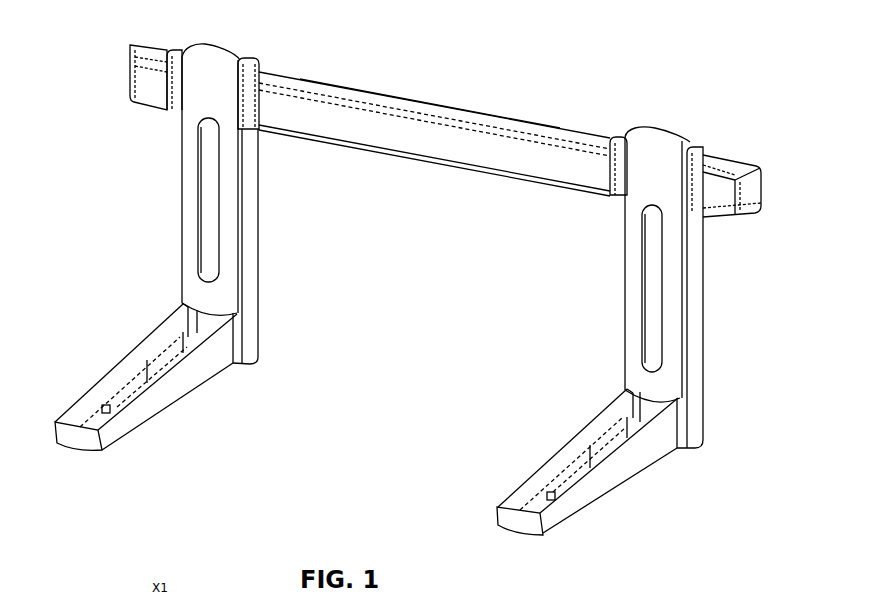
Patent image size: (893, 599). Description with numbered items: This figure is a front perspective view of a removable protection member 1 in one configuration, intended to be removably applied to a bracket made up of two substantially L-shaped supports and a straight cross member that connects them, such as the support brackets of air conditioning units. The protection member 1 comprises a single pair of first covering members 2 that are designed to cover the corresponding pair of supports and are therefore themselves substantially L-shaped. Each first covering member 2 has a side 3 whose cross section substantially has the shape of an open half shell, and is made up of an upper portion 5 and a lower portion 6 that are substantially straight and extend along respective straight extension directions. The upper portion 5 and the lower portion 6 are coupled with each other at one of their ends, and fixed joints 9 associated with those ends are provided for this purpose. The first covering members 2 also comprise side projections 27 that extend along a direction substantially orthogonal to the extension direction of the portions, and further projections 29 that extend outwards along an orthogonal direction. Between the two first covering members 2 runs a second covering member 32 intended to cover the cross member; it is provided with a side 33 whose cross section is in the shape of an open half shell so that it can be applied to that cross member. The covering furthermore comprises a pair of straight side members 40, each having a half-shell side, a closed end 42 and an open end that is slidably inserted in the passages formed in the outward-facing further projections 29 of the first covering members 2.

The removable protection member 1 is at (752, 135).
The first covering member 2 is at (262, 235).
The side 3 is at (240, 260).
The upper portion 5 is at (184, 193).
The lower portion 6 is at (140, 418).
The fixed joint 9 is at (184, 306).
The side projection 27 is at (252, 62).
The further projection 29 is at (185, 50).
The second covering member 32 is at (446, 107).
The side 33 is at (426, 148).
The straight side member 40 is at (133, 97).
The closed end 42 is at (176, 90).